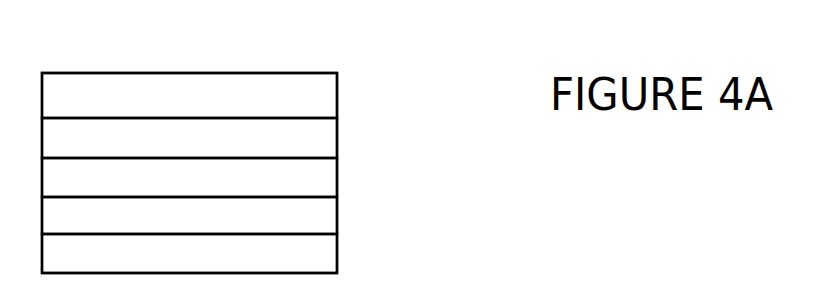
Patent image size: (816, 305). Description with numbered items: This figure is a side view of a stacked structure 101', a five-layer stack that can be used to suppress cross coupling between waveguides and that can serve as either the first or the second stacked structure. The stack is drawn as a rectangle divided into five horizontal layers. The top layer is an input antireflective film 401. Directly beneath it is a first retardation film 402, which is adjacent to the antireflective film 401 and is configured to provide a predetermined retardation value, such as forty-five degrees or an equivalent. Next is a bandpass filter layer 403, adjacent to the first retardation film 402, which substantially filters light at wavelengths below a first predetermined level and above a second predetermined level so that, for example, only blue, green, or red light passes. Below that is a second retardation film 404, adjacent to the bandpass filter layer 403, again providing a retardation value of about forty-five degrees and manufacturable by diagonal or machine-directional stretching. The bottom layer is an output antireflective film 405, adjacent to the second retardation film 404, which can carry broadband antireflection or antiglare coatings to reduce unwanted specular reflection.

The stacked structure 101' is at (326, 173).
The input antireflective film 401 is at (324, 109).
The first retardation film 402 is at (324, 150).
The bandpass filter layer 403 is at (329, 175).
The second retardation film 404 is at (327, 218).
The output antireflective film 405 is at (328, 253).